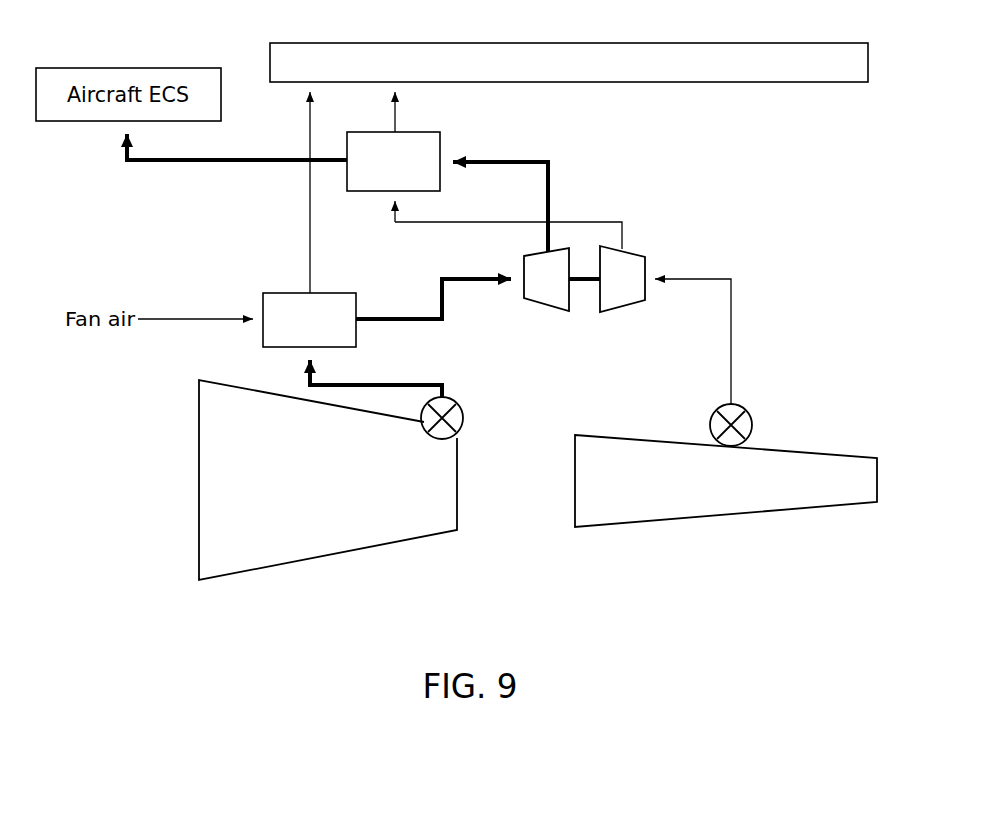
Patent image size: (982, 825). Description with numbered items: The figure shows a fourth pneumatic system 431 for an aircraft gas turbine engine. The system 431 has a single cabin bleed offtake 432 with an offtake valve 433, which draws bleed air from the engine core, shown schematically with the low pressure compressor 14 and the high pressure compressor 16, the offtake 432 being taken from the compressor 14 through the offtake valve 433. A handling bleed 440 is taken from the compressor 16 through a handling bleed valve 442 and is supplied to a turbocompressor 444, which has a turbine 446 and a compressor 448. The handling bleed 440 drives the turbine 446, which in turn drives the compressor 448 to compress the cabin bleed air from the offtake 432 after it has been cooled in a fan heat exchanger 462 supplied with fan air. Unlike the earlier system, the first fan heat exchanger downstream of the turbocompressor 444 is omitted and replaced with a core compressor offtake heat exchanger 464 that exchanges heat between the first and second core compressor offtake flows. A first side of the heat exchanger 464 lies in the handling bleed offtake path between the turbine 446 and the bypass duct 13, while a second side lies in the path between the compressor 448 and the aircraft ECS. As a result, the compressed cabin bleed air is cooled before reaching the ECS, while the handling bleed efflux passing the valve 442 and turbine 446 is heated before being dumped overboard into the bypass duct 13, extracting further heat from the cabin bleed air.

The bypass duct 13 is at (738, 74).
The low pressure compressor / fan 14 is at (323, 557).
The high pressure compressor 16 is at (707, 518).
The fourth pneumatic system 431 is at (507, 537).
The cabin bleed offtake 432 is at (287, 150).
The offtake valve 433 is at (463, 418).
The handling bleed 440 is at (482, 200).
The high pressure bleed valve 442 is at (752, 425).
The turbocompressor 444 is at (557, 220).
The turbine 446 is at (647, 267).
The compressor 448 is at (522, 267).
The fan heat exchanger 462 is at (280, 292).
The core compressor offtake heat exchanger 464 is at (440, 136).